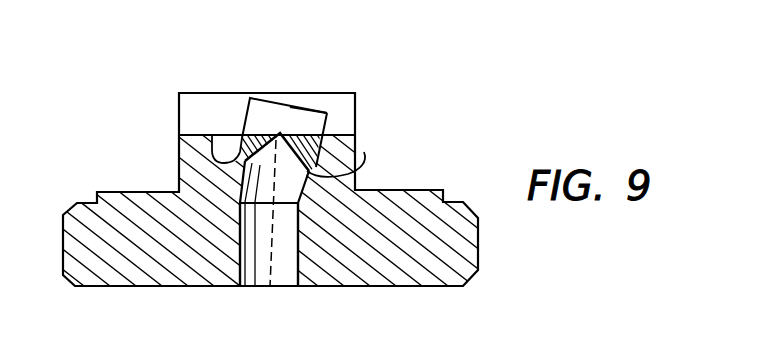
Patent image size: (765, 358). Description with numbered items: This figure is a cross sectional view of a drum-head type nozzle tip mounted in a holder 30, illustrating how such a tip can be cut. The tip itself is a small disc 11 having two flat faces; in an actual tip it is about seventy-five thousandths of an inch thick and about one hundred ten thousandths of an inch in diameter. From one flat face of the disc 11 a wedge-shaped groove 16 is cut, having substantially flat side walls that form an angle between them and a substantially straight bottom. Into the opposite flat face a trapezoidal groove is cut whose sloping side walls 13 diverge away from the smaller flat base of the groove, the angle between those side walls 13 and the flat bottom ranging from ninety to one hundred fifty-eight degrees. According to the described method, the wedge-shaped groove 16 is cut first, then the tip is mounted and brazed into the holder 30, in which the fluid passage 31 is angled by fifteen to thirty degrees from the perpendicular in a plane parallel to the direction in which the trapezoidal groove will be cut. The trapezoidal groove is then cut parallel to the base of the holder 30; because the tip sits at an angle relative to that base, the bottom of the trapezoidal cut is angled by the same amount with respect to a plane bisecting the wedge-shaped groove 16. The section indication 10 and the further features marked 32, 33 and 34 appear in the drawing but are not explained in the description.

The section line 10- 10 is at (280, 133).
The disc 11 is at (328, 126).
The side walls of the trapezoidal groove 13 is at (258, 106).
The wedge-shaped groove 16 is at (284, 151).
The holder 30 is at (395, 190).
The fluid passage 31 is at (283, 286).
The relief groove 32 is at (212, 136).
The top face of insert 33 is at (374, 62).
The cutting edge 34 is at (333, 79).